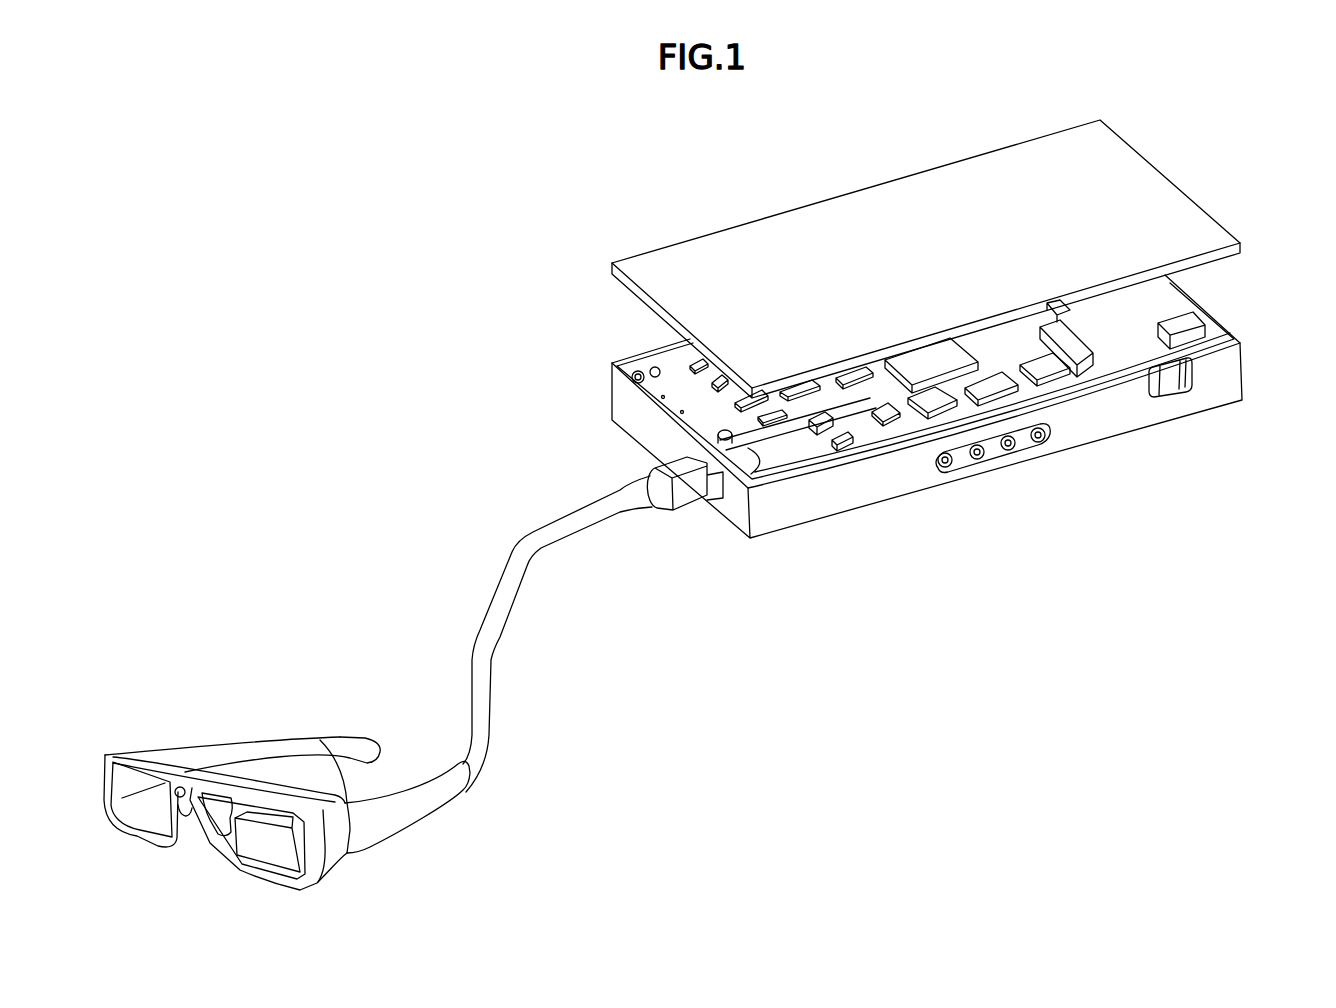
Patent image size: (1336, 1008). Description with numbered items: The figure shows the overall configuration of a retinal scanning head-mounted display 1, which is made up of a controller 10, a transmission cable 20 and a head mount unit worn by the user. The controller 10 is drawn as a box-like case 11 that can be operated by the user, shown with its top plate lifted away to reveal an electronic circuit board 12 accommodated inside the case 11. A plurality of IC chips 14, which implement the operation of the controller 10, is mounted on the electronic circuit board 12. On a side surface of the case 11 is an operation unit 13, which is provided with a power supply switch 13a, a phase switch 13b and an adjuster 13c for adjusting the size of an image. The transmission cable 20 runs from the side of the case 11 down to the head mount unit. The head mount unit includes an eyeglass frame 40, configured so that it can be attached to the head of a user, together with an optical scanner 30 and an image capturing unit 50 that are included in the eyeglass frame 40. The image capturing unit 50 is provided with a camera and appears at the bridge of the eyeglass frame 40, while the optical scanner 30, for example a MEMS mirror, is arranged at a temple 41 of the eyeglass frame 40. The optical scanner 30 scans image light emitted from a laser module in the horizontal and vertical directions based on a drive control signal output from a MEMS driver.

The retinal scanning head-mounted display 1 is at (196, 201).
The controller 10 is at (866, 187).
The case 11 is at (1228, 367).
The electronic circuit board 12 is at (883, 431).
The operation unit 13 is at (1064, 458).
The power supply switch 13a is at (1152, 420).
The phase switch 13b is at (1012, 457).
The adjuster 13c is at (947, 468).
The IC chips 14 is at (927, 363).
The transmission cable 20 is at (535, 540).
The optical scanner 30 is at (350, 827).
The eyeglass frame 40 is at (103, 746).
The temple 41 is at (350, 830).
The image capturing unit 50 is at (178, 787).